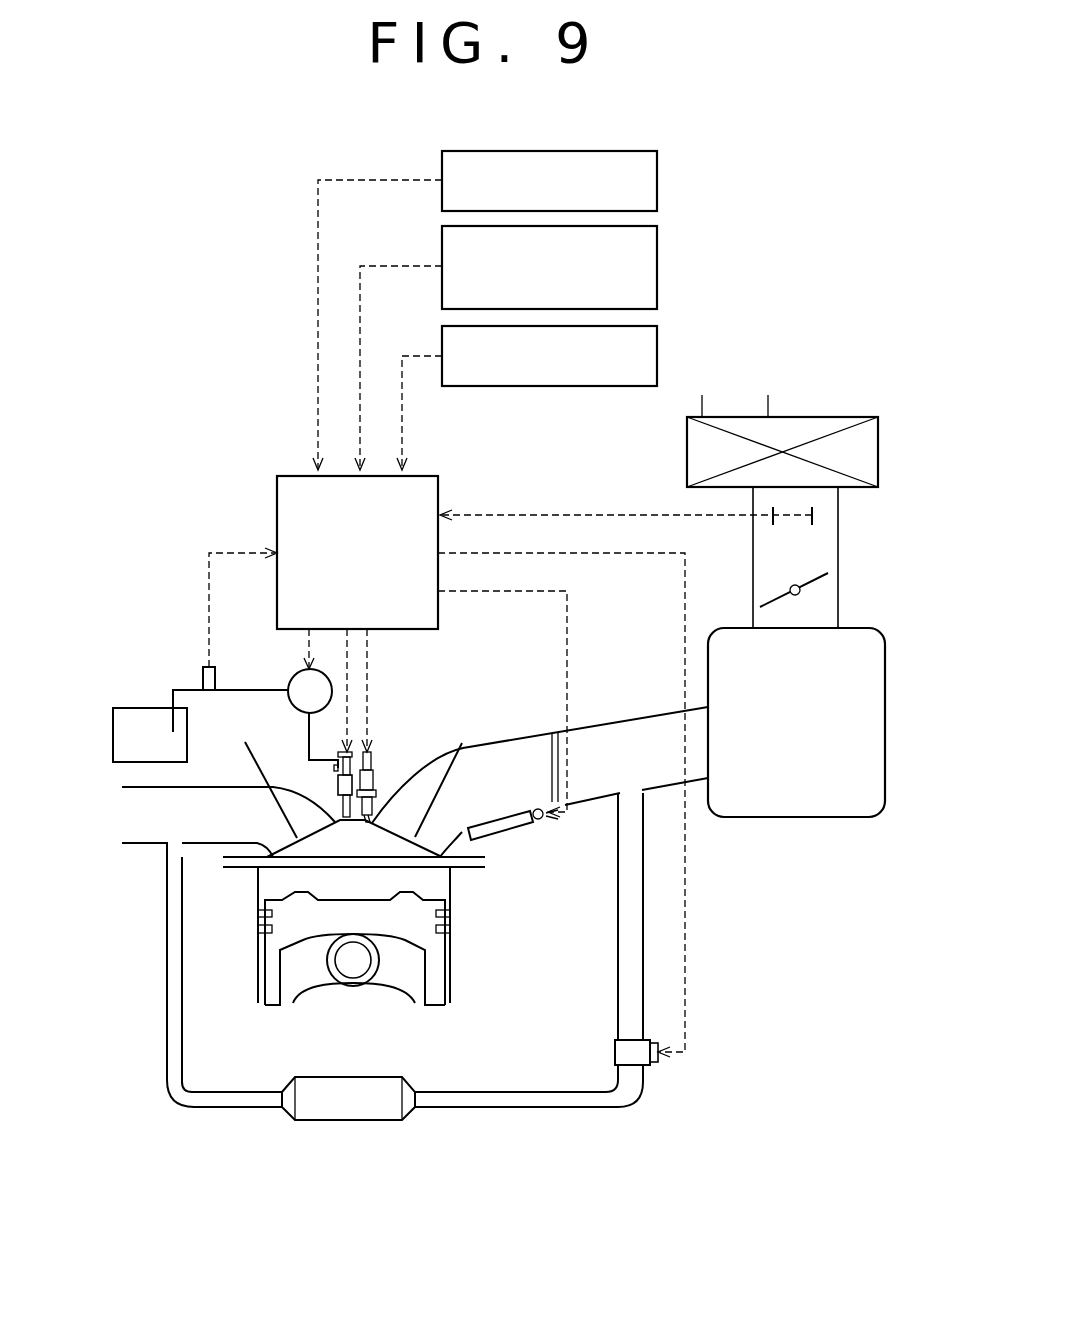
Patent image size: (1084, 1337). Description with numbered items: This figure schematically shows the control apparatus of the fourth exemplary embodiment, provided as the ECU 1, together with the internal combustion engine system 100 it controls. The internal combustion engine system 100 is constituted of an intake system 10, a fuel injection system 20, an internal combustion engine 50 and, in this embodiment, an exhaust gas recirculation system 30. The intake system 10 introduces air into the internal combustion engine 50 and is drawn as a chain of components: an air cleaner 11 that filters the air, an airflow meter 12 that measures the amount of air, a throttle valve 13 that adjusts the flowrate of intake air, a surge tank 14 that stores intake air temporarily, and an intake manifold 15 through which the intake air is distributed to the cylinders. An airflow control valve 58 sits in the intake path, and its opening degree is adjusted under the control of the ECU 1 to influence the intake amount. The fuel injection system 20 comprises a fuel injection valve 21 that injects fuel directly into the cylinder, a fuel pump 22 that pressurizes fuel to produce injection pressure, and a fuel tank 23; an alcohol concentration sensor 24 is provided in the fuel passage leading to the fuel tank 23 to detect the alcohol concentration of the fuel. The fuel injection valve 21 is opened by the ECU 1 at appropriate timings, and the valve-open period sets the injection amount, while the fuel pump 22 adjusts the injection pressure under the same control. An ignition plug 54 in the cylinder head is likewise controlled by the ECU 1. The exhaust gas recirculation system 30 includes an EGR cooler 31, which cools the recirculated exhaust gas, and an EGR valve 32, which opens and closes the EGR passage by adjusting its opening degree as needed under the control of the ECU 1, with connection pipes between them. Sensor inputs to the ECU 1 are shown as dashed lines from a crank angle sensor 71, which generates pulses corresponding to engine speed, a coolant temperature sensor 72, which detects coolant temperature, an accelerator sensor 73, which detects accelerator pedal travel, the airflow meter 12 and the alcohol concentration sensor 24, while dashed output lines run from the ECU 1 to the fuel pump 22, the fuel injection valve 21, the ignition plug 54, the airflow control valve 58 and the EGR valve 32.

The ECU 1 is at (277, 500).
The intake system 10 is at (798, 372).
The air cleaner 11 is at (878, 452).
The airflow meter 12 is at (812, 520).
The throttle valve 13 is at (810, 585).
The surge tank 14 is at (817, 780).
The intake manifold 15 is at (592, 742).
The fuel injection system 20 is at (170, 615).
The fuel injection valve 21 is at (337, 790).
The fuel pump 22 is at (296, 678).
The fuel tank 23 is at (187, 730).
The alcohol concentration sensor 24 is at (203, 672).
The exhaust gas recirculation system 30 is at (157, 1118).
The EGR cooler 31 is at (375, 1122).
The EGR valve 32 is at (645, 1068).
The internal combustion engine 50 is at (466, 946).
The ignition plug 54 is at (375, 786).
The airflow control valve 58 is at (505, 827).
The crank angle sensor 71 is at (657, 180).
The coolant temperature sensor 72 is at (657, 267).
The accelerator sensor 73 is at (657, 356).
The internal combustion engine system 100 is at (822, 1142).